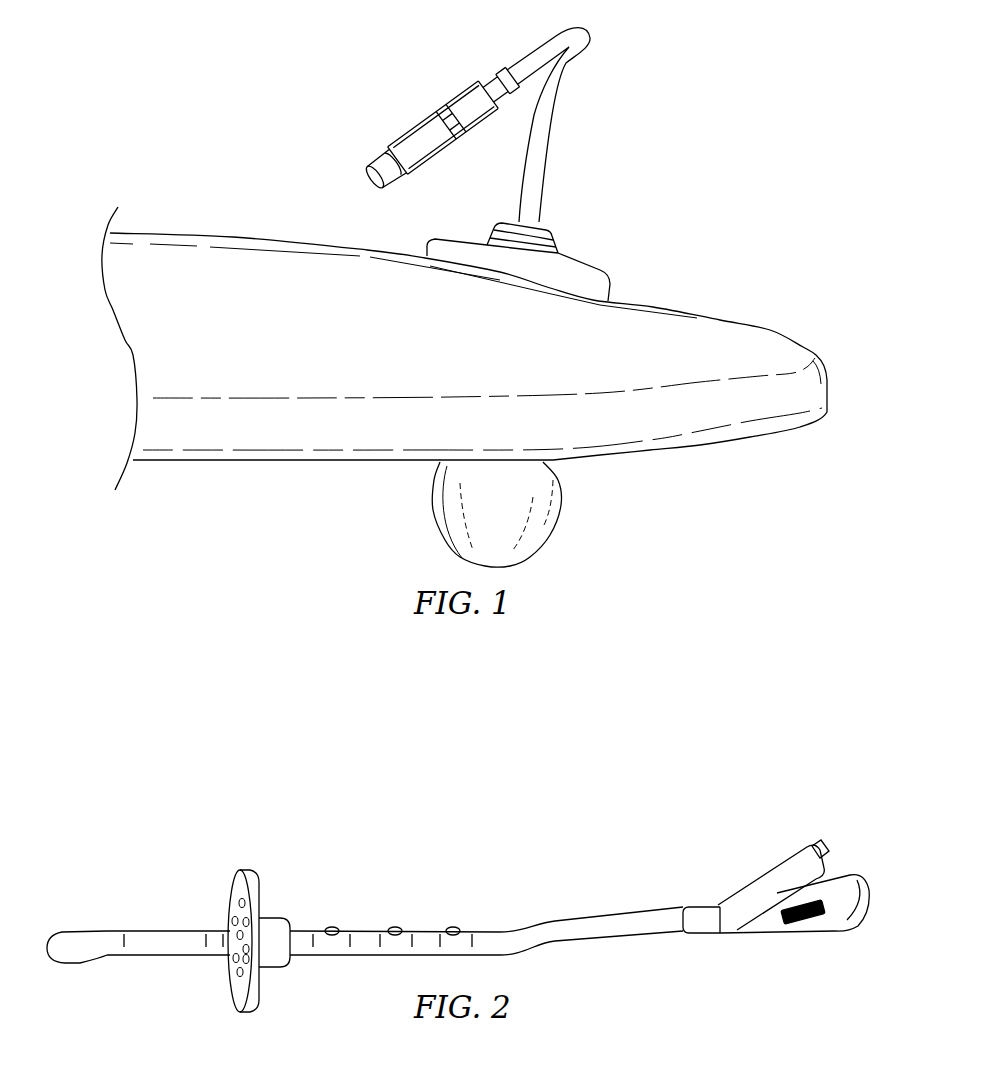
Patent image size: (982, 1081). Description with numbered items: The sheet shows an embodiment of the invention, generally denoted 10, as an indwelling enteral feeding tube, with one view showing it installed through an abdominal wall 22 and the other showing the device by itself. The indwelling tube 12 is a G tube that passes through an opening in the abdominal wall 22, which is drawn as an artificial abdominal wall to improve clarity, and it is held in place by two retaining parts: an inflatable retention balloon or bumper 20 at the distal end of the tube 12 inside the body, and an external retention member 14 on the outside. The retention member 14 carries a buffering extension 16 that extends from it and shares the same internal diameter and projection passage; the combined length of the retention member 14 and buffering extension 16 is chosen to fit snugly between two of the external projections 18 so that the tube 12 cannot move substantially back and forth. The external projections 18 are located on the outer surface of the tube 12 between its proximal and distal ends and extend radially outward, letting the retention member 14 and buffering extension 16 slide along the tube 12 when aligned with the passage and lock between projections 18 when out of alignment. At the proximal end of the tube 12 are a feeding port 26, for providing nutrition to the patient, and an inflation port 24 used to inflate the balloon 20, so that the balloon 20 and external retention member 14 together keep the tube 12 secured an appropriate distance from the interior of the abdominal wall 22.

In FIG. 1, the indwelling enteral feeding tube assembly 10 is at (320, 65).
In FIG. 2, the indwelling enteral feeding tube assembly 10 is at (546, 786).
In FIG. 1, the indwelling tube 12 is at (548, 143).
In FIG. 2, the indwelling tube 12 is at (540, 943).
In FIG. 1, the retention member 14 is at (592, 273).
In FIG. 2, the retention member 14 is at (240, 872).
In FIG. 1, the buffering extension 16 is at (552, 233).
In FIG. 2, the buffering extension 16 is at (288, 922).
In FIG. 2, the external projections 18 is at (338, 928).
In FIG. 1, the inflatable retention balloon or bumper 20 is at (533, 533).
In FIG. 2, the inflatable retention balloon or bumper 20 is at (85, 963).
In FIG. 1, the abdominal wall 22 is at (250, 342).
In FIG. 2, the inflation port 24 is at (787, 853).
In FIG. 2, the feeding port 26 is at (785, 925).